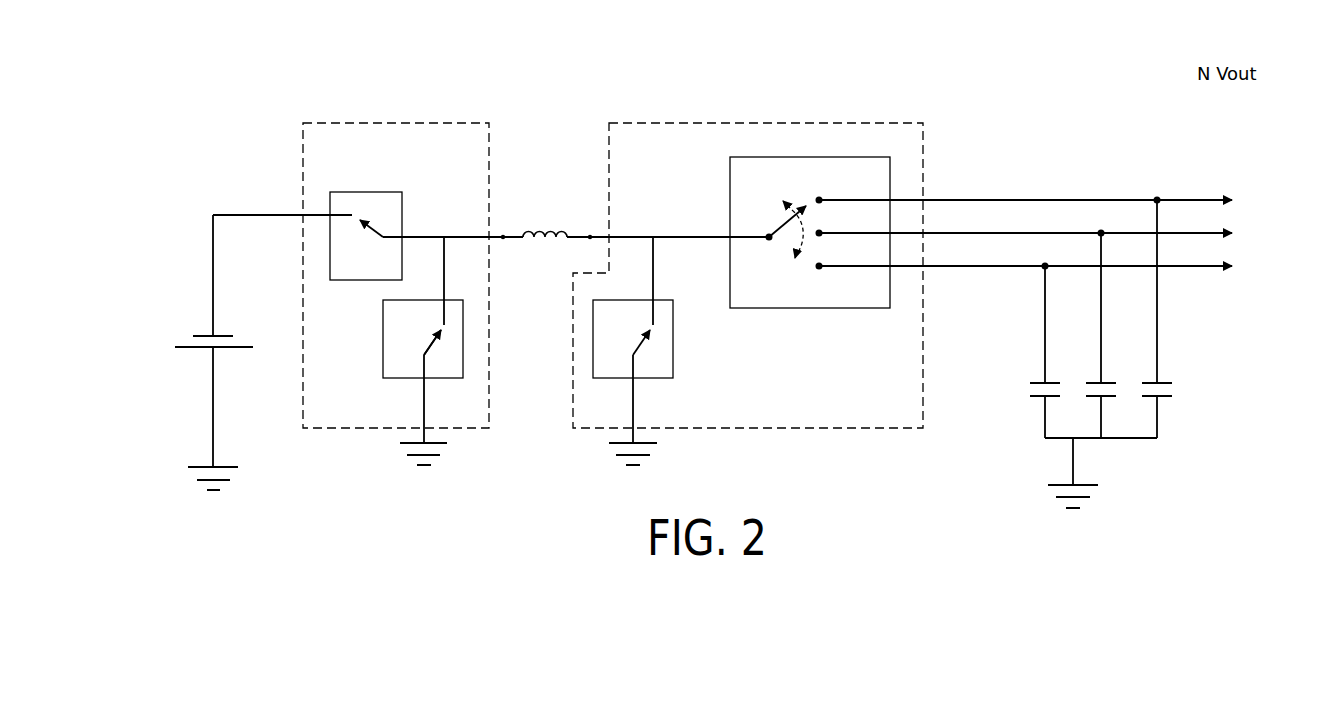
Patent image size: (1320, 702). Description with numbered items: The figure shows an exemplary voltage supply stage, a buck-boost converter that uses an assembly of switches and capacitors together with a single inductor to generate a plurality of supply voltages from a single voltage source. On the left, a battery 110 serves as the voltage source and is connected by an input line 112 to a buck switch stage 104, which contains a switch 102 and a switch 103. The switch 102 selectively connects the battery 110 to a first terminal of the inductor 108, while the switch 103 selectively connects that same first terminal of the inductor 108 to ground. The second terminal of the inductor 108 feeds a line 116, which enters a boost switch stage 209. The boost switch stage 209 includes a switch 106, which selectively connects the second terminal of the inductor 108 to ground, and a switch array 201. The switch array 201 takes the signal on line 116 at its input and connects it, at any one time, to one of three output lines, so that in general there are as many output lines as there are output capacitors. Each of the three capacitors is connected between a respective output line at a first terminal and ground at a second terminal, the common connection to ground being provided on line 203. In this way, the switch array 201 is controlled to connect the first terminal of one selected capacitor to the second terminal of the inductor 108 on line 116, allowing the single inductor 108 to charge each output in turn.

The buck switch stage 104 is at (401, 122).
The boost switch stage 209 is at (766, 122).
The input line 112 is at (259, 212).
The battery 110 is at (169, 333).
The switch 102 is at (392, 207).
The switch 103 is at (390, 361).
The inductor 108 is at (540, 245).
The line 116 is at (684, 232).
The switch 106 is at (665, 359).
The switch array 201 is at (780, 320).
The line 203 is at (1074, 463).